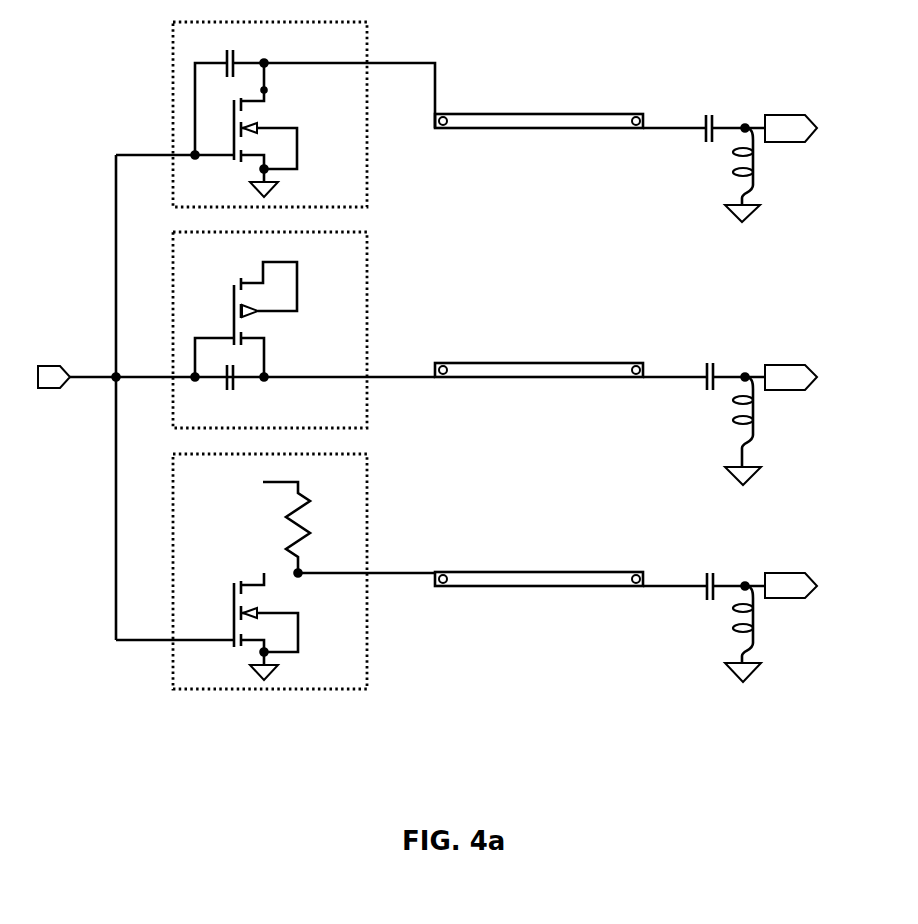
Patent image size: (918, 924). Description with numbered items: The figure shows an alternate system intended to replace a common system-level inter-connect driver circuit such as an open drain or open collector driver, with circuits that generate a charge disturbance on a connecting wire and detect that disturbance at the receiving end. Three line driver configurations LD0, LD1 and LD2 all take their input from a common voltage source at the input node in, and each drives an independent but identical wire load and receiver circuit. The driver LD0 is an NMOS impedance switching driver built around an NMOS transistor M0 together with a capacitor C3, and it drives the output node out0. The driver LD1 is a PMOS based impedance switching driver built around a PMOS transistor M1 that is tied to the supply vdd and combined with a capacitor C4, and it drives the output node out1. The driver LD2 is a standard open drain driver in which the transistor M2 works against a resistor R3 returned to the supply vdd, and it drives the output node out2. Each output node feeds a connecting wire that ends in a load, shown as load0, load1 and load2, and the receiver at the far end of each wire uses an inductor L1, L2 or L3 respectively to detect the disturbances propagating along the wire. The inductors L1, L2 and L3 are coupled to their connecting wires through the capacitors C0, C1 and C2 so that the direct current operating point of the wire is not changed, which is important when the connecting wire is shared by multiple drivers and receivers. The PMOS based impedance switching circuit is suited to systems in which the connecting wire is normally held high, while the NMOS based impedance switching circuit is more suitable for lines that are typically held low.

The input in is at (236, 397).
The NMOS impedance switching driver LD0 is at (270, 114).
The PMOS based impedance switching driver LD1 is at (270, 330).
The open drain driver LD2 is at (270, 571).
The capacitor C3 is at (230, 94).
The capacitor C4 is at (230, 391).
The NMOS transistor M0 is at (265, 130).
The PMOS transistor M1 is at (246, 319).
The NMOS transistor M2 is at (266, 626).
The NMOS transistor NMOS is at (331, 389).
The PMOS transistor PMOS is at (328, 291).
The supply voltage vdd is at (271, 361).
The resistor R3 is at (298, 529).
The output node out0 is at (485, 86).
The output node out1 is at (552, 367).
The output node out2 is at (502, 569).
The coupling capacitor C0 is at (732, 118).
The capacitor C1 is at (731, 367).
The capacitor C2 is at (731, 576).
The inductor L1 is at (752, 175).
The inductor L2 is at (752, 431).
The inductor L3 is at (752, 634).
The wire load load0 is at (791, 128).
The wire load load1 is at (791, 377).
The wire load load2 is at (791, 585).